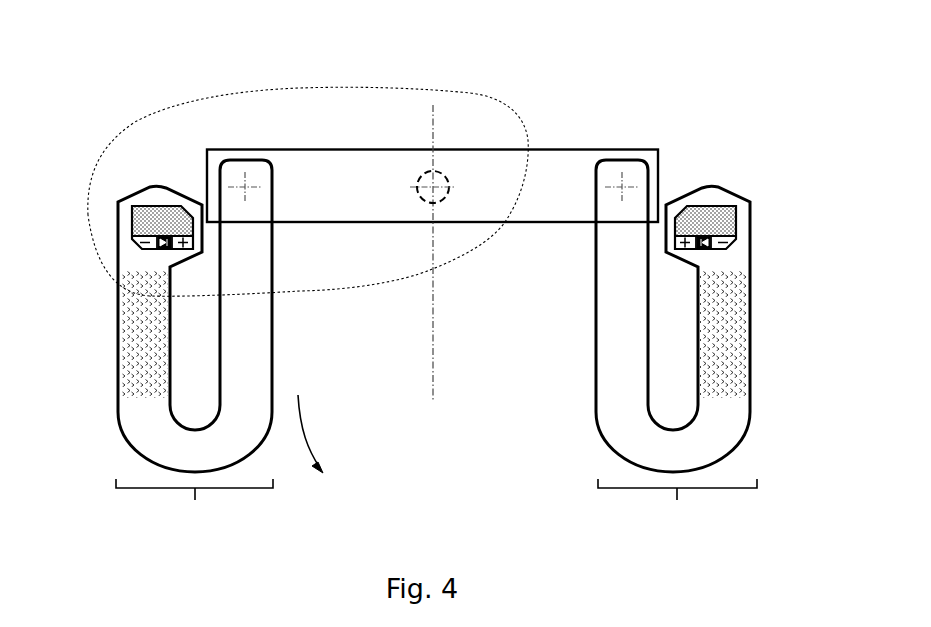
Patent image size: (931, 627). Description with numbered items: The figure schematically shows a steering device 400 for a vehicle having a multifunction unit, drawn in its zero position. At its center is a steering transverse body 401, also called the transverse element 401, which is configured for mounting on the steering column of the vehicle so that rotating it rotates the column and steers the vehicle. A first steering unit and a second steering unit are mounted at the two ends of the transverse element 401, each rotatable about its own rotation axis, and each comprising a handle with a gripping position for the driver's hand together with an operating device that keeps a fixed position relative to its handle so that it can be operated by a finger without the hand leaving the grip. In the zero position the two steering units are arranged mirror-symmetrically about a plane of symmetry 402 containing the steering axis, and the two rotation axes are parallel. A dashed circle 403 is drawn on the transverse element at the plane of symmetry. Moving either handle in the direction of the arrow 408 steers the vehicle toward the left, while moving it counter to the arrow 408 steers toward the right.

The steering device 400 is at (167, 66).
The steering transverse body 401 is at (480, 163).
The plane of symmetry 402 is at (436, 343).
The pivot point 403 is at (435, 193).
The arrow 408 is at (300, 418).